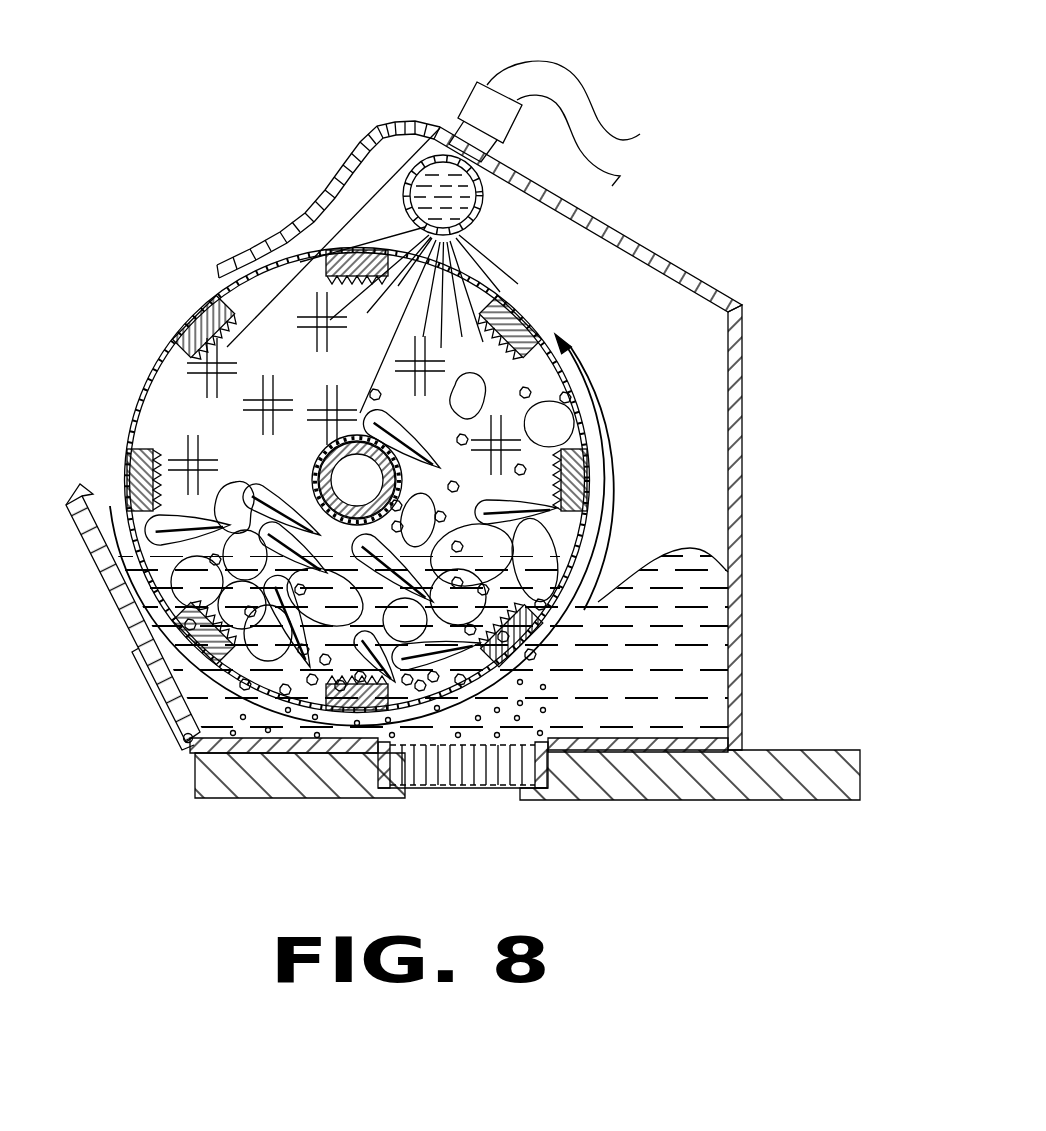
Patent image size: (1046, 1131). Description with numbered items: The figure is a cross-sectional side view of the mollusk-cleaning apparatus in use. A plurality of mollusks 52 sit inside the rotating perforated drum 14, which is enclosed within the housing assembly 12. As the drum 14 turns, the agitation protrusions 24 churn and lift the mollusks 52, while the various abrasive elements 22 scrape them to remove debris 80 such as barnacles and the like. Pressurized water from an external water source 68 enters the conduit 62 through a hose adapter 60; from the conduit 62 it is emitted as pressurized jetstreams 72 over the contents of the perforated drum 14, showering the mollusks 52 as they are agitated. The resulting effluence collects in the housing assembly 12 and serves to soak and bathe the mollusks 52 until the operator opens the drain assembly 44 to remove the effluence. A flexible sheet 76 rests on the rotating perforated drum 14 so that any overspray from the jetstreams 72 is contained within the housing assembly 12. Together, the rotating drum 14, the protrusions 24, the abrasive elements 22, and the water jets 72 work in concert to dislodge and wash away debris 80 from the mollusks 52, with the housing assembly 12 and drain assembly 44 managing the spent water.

The housing assembly 12 is at (742, 452).
The rotating perforated drum 14 is at (530, 337).
The abrasive elements 22 is at (150, 490).
The agitation protrusions 24 is at (585, 480).
The drain assembly 44 is at (545, 755).
The mollusks 52 is at (540, 425).
The hose adapter 60 is at (515, 126).
The conduit 62 is at (412, 168).
The external water source 68 is at (598, 128).
The pressurized jetstreams 72 is at (373, 235).
The flexible sheet 76 is at (386, 124).
The debris 80 is at (520, 680).